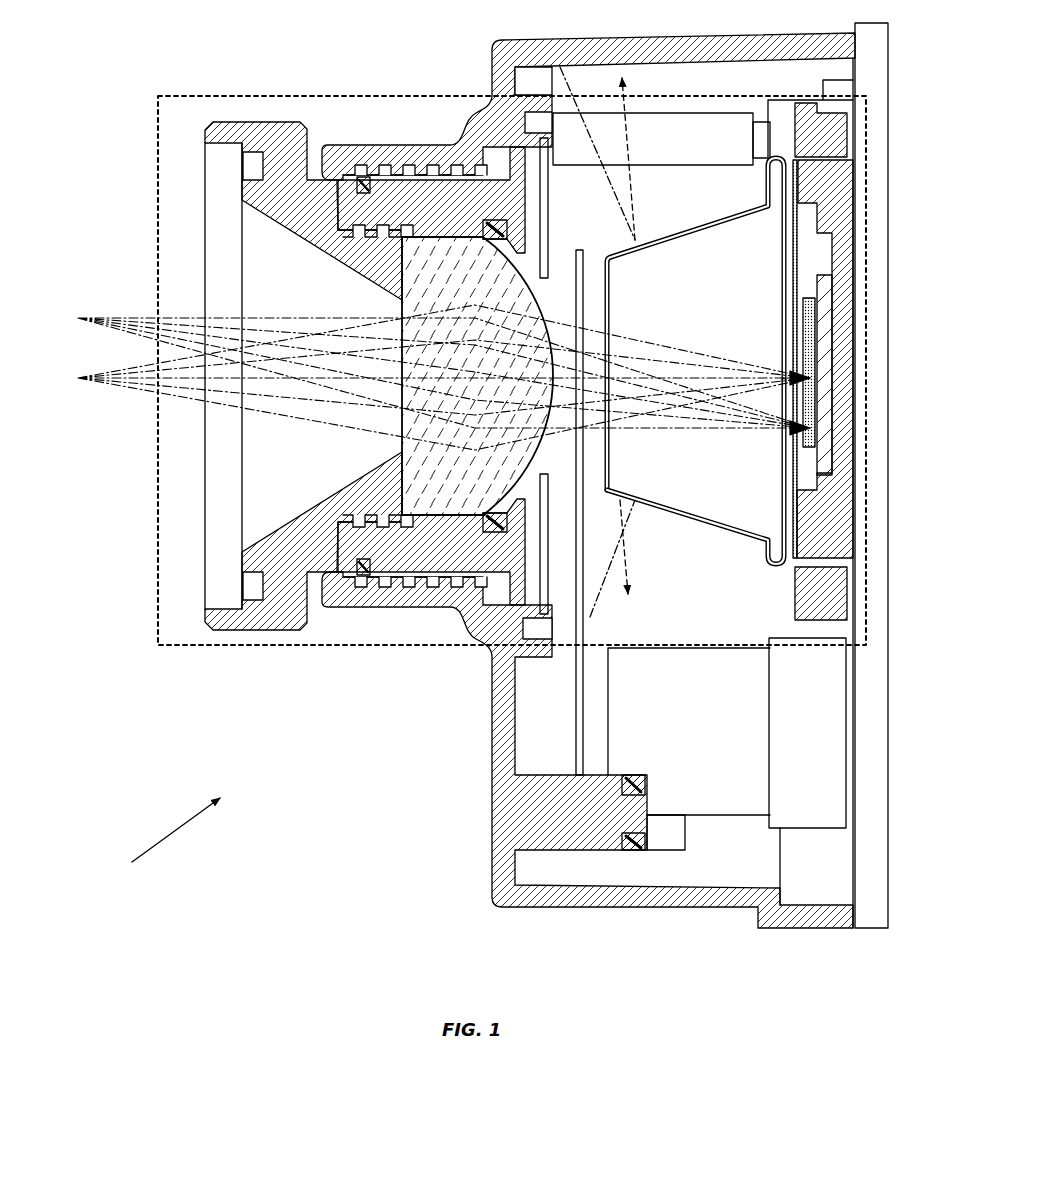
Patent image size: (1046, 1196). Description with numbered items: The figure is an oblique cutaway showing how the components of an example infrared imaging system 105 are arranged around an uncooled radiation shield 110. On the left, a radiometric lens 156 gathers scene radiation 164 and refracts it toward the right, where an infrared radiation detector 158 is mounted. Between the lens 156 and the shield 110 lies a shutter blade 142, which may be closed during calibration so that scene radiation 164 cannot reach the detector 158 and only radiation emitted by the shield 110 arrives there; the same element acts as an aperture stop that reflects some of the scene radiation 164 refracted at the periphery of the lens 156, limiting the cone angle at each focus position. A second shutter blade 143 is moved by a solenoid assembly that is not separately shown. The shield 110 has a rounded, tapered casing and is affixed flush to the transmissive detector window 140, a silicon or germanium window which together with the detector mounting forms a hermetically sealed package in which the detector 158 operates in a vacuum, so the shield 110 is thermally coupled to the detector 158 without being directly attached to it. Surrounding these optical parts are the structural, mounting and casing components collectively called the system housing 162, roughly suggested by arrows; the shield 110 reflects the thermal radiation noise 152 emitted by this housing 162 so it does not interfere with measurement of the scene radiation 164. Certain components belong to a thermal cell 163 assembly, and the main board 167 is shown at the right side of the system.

The infrared imaging system 105 is at (154, 837).
The uncooled radiation shield 110 is at (707, 516).
The detector window 140 is at (778, 232).
The shutter blade 142 is at (548, 218).
The shutter blade 143 is at (579, 252).
The thermal radiation noise 152 is at (630, 179).
The radiometric lens 156 is at (406, 435).
The infrared radiation detector 158 is at (806, 298).
The system housing 162 is at (706, 44).
The thermal cell 163 is at (291, 92).
The scene radiation 164 is at (136, 342).
The main board 167 is at (878, 928).